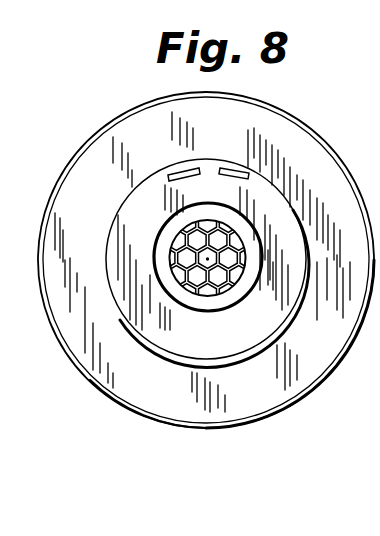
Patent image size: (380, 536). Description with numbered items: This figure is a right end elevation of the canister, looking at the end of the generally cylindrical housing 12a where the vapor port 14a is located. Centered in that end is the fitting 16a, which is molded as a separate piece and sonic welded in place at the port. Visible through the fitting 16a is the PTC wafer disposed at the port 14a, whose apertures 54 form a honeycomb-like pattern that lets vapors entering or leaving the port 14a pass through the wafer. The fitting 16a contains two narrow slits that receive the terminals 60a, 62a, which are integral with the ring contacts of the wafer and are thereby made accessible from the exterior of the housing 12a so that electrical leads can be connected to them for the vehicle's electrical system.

The housing 12a is at (285, 113).
The vapor port 14a is at (112, 198).
The fitting 16a is at (193, 301).
The apertures 54 is at (177, 245).
The terminal 60a is at (233, 168).
The terminal 62a is at (177, 172).